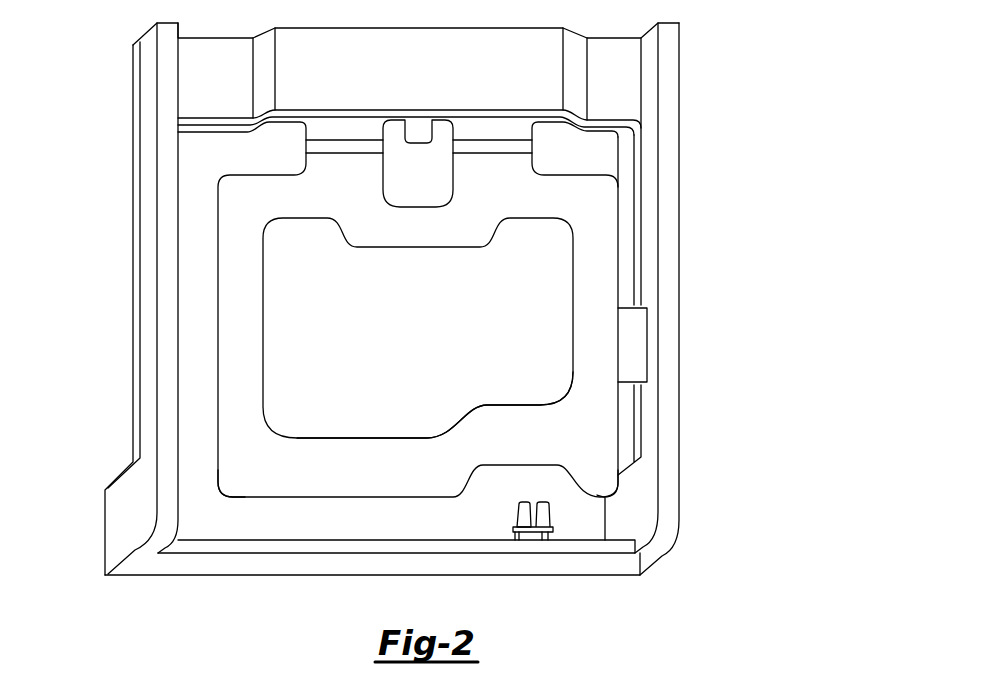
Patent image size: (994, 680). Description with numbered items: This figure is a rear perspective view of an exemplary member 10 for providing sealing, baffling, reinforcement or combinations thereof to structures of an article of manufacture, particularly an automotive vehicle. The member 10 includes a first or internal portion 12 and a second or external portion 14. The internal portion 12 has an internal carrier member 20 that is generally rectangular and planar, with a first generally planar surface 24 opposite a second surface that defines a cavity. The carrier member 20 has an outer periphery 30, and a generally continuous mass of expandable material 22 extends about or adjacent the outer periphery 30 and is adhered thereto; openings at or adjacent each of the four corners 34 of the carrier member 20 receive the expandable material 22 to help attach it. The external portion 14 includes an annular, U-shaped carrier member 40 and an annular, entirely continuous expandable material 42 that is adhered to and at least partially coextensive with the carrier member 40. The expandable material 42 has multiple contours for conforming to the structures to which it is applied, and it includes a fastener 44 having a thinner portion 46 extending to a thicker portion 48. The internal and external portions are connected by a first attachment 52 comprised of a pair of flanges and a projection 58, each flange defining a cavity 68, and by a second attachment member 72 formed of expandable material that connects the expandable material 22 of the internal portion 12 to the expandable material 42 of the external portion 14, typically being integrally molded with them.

The member 10 is at (735, 379).
The internal portion 12 is at (637, 231).
The external portion 14 is at (757, 448).
The internal carrier member 20 is at (426, 309).
The expandable material 22 is at (501, 204).
The first generally planar surface 24 is at (509, 368).
The outer periphery 30 is at (598, 282).
The corners 34 is at (237, 482).
The carrier member 40 is at (131, 80).
The expandable material 42 is at (317, 563).
The fastener 44 is at (568, 538).
The thinner portion 46 is at (523, 537).
The thicker portion 48 is at (510, 515).
The first attachment 52 is at (546, 150).
The projection 58 is at (418, 135).
The cavity 68 is at (330, 132).
The second attachment member 72 is at (643, 340).